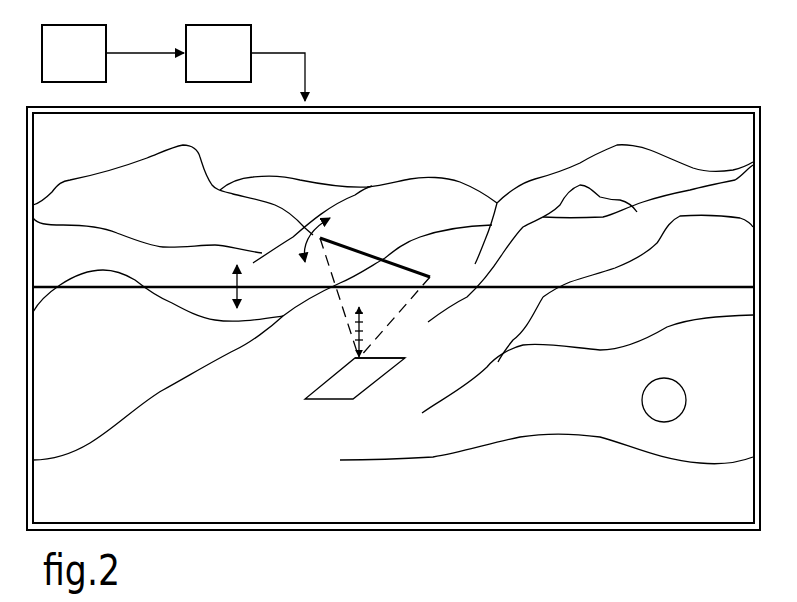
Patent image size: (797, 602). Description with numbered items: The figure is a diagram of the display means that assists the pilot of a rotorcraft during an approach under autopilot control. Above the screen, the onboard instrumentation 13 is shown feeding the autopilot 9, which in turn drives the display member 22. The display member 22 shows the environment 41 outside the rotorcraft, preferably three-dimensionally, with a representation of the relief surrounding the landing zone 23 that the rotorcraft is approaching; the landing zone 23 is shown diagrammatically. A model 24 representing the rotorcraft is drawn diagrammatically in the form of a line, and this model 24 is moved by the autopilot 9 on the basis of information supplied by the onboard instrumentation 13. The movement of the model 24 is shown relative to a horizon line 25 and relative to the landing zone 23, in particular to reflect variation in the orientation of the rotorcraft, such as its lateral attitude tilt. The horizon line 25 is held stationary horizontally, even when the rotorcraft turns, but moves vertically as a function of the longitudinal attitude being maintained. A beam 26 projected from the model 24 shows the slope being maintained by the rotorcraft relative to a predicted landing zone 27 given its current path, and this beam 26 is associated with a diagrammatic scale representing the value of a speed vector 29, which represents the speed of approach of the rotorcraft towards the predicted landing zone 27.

The onboard instrumentation 13 is at (62, 66).
The autopilot 9 is at (226, 66).
The display member 22 is at (465, 100).
The landing zone 23 is at (318, 399).
The model 24 is at (420, 263).
The horizon line 25 is at (622, 288).
The beam 26 is at (385, 328).
The predicted landing zone 27 is at (350, 358).
The speed vector 29 is at (343, 312).
The environment 41 is at (664, 400).